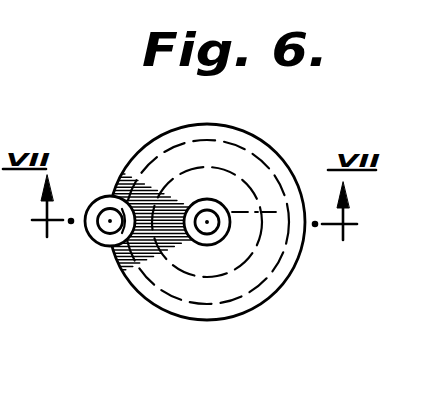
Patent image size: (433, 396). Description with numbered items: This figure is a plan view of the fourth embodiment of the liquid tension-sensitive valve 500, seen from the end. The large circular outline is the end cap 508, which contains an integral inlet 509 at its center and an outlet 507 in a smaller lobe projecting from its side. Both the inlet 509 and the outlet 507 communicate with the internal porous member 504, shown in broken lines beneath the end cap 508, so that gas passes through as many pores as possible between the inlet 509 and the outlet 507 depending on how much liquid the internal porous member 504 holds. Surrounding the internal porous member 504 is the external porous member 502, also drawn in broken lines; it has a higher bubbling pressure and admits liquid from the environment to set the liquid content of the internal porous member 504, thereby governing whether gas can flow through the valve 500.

The liquid tension-sensitive valve 500 is at (136, 147).
The external porous member 502 is at (213, 305).
The internal porous member 504 is at (185, 273).
The outlet 507 is at (98, 236).
The end cap 508 is at (262, 258).
The inlet 509 is at (218, 200).